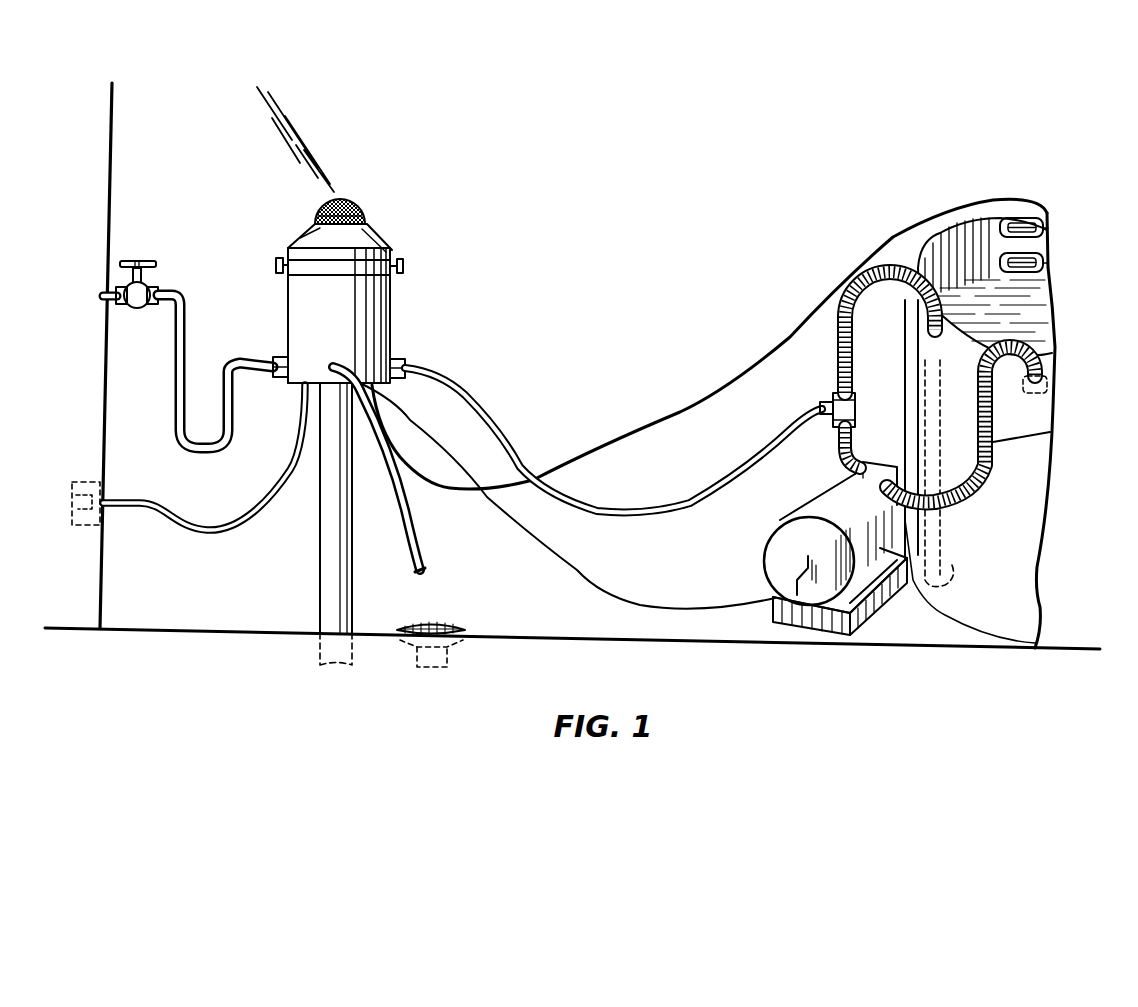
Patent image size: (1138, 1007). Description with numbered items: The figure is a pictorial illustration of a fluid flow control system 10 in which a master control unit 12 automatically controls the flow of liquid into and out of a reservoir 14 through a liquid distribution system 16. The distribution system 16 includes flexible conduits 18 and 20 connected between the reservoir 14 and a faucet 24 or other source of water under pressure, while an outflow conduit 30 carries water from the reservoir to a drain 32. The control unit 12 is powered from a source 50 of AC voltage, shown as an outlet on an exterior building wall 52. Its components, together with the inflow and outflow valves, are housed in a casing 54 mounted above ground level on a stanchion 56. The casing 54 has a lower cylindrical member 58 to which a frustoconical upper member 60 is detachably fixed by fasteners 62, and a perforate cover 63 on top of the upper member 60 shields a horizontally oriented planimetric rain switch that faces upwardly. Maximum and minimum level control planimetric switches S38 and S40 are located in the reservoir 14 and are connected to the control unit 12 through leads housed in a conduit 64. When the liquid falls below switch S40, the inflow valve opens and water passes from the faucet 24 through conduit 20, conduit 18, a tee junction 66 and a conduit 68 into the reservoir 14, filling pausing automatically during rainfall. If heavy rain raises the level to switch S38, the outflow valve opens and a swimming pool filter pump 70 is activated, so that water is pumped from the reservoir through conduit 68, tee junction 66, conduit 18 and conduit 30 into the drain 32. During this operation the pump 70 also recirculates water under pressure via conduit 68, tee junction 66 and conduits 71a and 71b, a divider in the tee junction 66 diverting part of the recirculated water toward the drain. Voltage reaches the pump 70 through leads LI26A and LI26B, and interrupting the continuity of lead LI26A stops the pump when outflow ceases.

The fluid flow control system 10 is at (662, 247).
The master control unit 12 is at (280, 228).
The reservoir 14 is at (994, 491).
The liquid distribution system 16 is at (534, 440).
The flexible conduit 18 is at (697, 496).
The flexible conduit 20 is at (236, 379).
The faucet 24 is at (155, 262).
The conduit 30 is at (413, 543).
The drain 32 is at (456, 626).
The source of AC voltage 50 is at (104, 485).
The exterior building wall 52 is at (108, 356).
The casing 54 is at (280, 303).
The stanchion 56 is at (320, 585).
The lower cylindrical member 58 is at (288, 333).
The frustoconical upper member 60 is at (384, 236).
The fasteners 62 is at (276, 266).
The perforate cover 63 is at (368, 211).
The conduit 64 is at (694, 403).
The tee junction 66 is at (833, 404).
The conduit 68 is at (837, 345).
The swimming pool filter pump 70 is at (795, 541).
The conduit 71a is at (851, 461).
The conduit 71b is at (1040, 437).
The maximum level control planimetric switch S38 is at (1048, 229).
The minimum level control planimetric switch S40 is at (1048, 263).
The lead LI26A is at (617, 608).
The lead LI26B is at (561, 627).